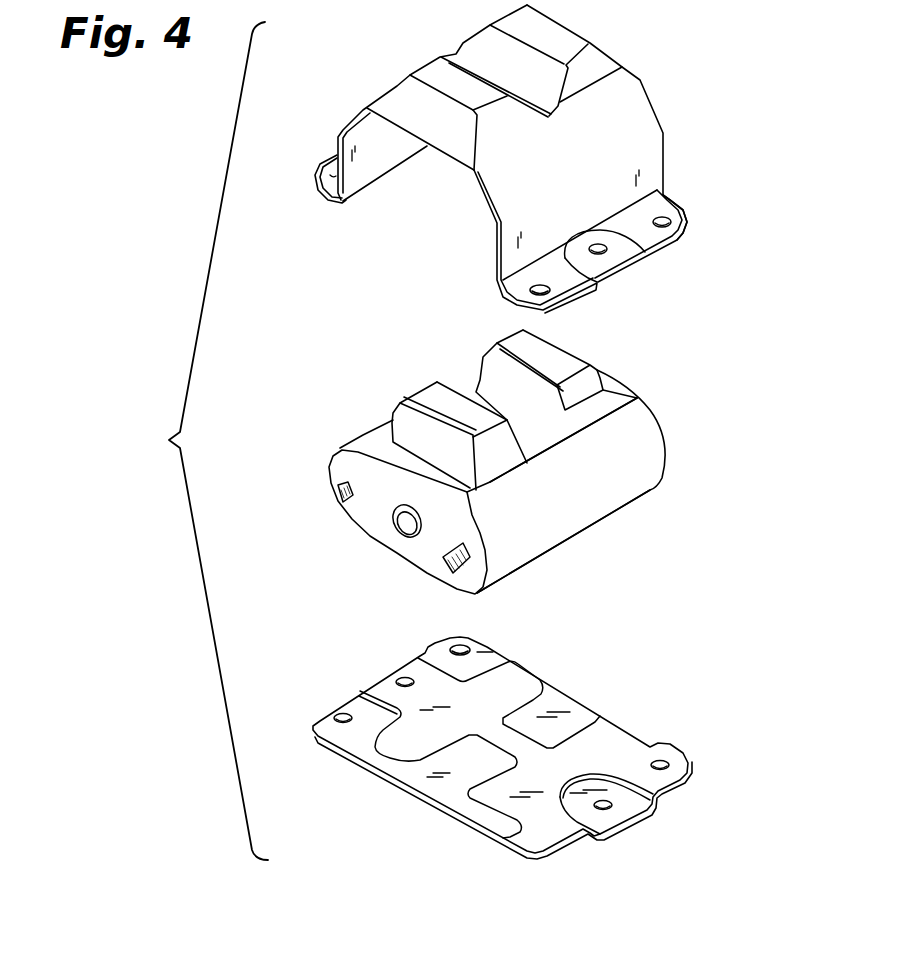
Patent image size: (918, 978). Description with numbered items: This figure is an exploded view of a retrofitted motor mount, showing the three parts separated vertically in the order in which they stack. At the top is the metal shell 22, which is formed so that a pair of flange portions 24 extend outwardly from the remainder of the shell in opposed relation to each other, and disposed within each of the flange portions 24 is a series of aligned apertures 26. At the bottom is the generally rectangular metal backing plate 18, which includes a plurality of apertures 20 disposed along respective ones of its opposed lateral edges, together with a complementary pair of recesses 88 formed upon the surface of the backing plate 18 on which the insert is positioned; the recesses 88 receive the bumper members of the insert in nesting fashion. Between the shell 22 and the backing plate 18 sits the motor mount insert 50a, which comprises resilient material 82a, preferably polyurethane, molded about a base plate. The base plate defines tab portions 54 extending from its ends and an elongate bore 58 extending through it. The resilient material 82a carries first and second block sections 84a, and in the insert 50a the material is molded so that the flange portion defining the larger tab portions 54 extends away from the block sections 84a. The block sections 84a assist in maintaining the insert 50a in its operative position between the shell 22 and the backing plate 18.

The backing plate 18 is at (636, 714).
The apertures 20 is at (397, 677).
The shell 22 is at (672, 122).
The flange portions 24 is at (320, 178).
The apertures 26 is at (664, 228).
The motor mount insert 50a is at (668, 394).
The tab portions 54 is at (338, 492).
The bore 58 is at (400, 522).
The resilient material 82a is at (603, 505).
The block sections 84a is at (515, 334).
The recesses 88 is at (547, 707).